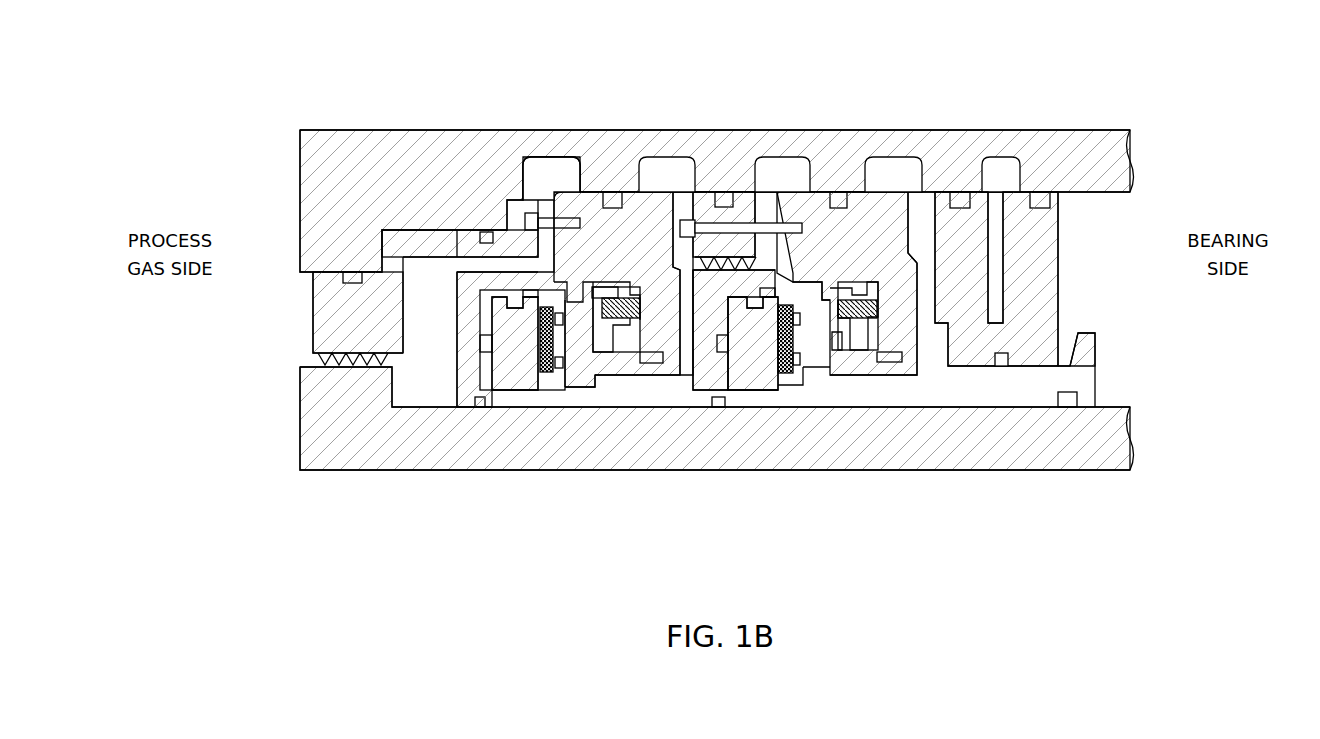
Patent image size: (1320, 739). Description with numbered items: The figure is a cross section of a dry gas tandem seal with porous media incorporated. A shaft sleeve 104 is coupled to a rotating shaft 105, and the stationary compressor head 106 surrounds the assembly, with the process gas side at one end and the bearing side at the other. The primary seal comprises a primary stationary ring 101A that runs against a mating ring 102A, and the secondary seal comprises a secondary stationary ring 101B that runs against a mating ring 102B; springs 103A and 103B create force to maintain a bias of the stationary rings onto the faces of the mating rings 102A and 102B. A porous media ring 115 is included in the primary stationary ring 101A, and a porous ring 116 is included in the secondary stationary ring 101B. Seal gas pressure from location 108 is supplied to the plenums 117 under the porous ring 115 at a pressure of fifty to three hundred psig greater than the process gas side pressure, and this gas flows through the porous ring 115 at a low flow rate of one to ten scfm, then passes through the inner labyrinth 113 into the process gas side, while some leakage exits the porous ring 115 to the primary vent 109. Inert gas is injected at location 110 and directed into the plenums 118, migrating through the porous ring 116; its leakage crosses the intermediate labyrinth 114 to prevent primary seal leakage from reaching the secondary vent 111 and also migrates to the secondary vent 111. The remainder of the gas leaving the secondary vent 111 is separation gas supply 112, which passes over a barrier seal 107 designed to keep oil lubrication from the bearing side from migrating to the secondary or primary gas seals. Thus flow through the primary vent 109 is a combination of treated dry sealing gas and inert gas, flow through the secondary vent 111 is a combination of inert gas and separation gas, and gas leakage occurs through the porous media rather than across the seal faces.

The primary stationary ring 101A is at (558, 327).
The secondary stationary ring 101B is at (805, 330).
The mating ring 102A is at (529, 390).
The mating ring 102B is at (756, 390).
The spring 103A is at (618, 292).
The spring 103B is at (863, 283).
The shaft sleeve 104 is at (455, 388).
The rotating shaft 105 is at (1067, 470).
The compressor head 106 is at (448, 130).
The barrier seal 107 is at (1005, 353).
The seal gas supply location 108 is at (543, 157).
The primary vent 109 is at (663, 157).
The inert gas injection location 110 is at (787, 157).
The secondary vent 111 is at (893, 157).
The separation gas supply 112 is at (998, 157).
The inner labyrinth 113 is at (313, 303).
The intermediate labyrinth 114 is at (703, 217).
The porous media ring 115 is at (547, 380).
The porous ring 116 is at (787, 380).
The plenums 117 is at (555, 315).
The plenums 118 is at (797, 327).